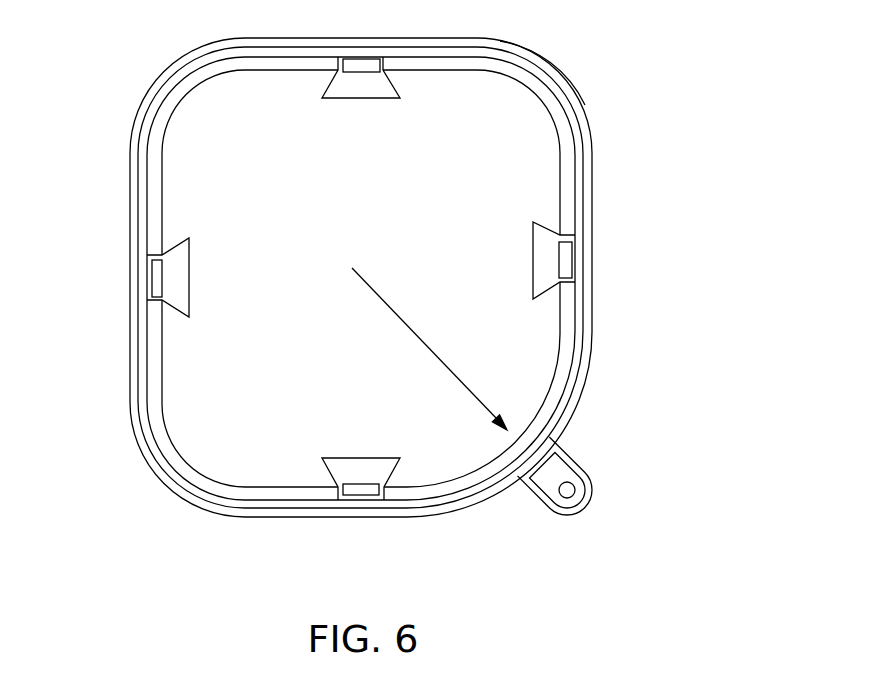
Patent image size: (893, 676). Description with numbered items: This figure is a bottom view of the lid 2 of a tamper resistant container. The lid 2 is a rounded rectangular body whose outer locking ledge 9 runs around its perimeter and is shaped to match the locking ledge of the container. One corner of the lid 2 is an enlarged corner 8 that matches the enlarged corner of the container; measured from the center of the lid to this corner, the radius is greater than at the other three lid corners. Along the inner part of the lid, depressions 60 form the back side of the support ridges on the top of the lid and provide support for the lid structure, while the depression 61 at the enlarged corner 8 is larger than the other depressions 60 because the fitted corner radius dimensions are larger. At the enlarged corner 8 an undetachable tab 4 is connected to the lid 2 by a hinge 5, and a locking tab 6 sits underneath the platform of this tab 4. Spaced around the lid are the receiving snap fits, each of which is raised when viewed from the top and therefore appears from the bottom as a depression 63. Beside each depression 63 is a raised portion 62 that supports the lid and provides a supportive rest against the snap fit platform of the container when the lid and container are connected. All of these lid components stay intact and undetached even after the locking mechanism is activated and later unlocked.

The lid 2 is at (655, 86).
The undetachable tab 4 is at (585, 472).
The hinge 5 is at (550, 435).
The locking tab 6 is at (575, 493).
The enlarged corner 8 is at (552, 377).
The outer locking ledge 9 is at (558, 72).
The depression 60 is at (157, 132).
The depression 61 is at (567, 345).
The raised portion 62 is at (338, 88).
The depression 63 is at (367, 65).